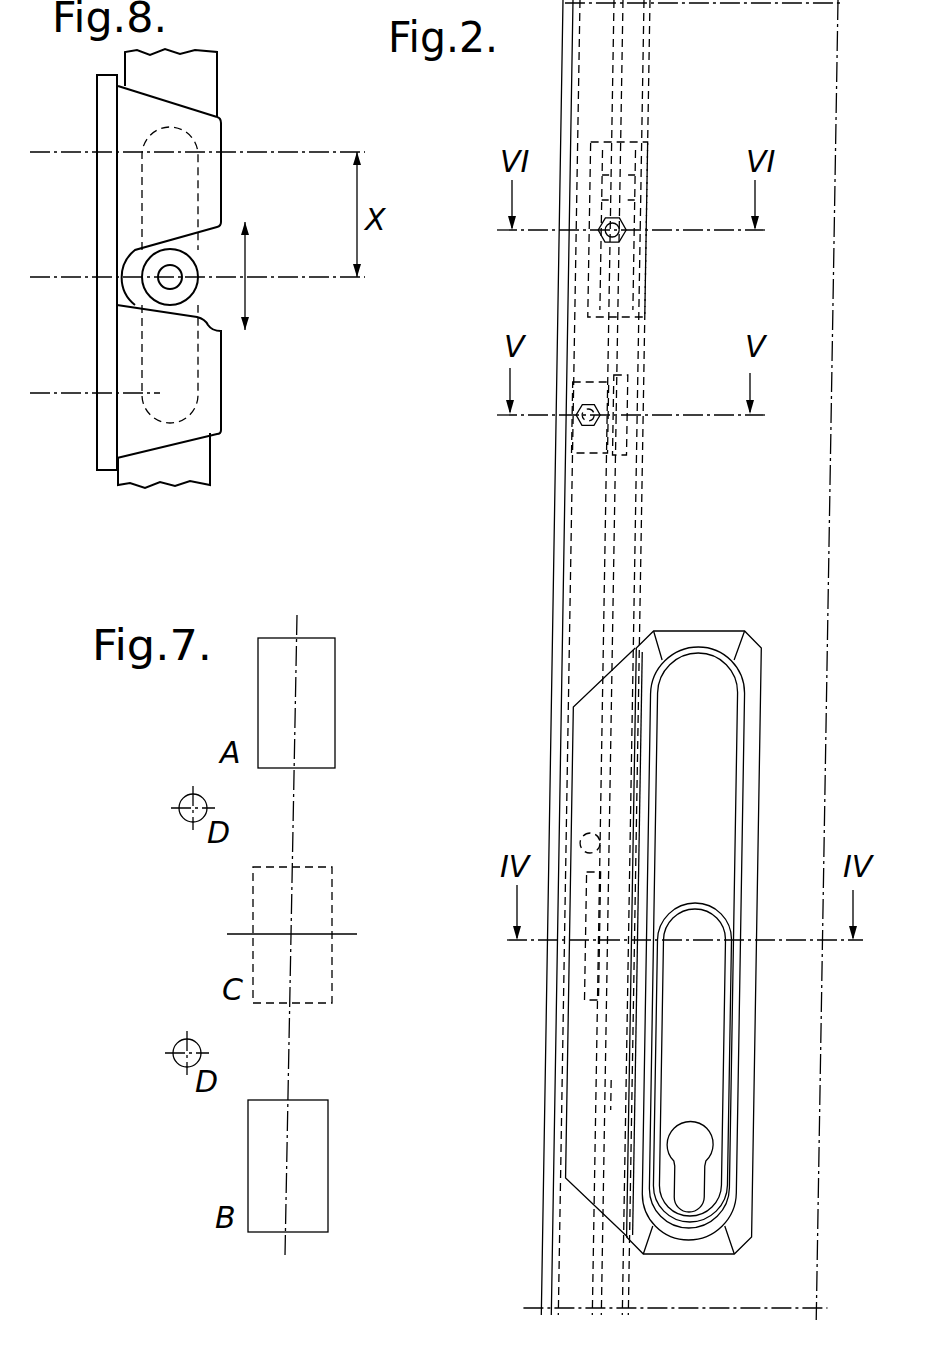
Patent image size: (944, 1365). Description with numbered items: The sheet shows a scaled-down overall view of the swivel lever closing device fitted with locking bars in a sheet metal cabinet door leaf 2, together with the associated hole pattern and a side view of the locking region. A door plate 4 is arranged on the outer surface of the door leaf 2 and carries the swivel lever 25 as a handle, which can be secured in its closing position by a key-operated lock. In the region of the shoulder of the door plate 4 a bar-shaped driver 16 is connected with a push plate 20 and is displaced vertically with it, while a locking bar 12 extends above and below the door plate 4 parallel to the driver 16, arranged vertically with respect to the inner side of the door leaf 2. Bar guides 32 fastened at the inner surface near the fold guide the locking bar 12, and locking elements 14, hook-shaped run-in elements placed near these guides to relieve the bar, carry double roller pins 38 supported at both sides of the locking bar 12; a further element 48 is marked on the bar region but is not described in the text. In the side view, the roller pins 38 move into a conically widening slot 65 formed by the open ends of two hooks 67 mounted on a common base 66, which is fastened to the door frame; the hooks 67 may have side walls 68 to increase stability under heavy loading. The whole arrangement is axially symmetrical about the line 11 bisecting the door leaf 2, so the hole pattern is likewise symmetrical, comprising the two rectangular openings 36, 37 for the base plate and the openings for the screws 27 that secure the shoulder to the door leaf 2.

In FIG. 2, the door leaf 2 is at (802, 83).
In FIG. 2, the door plate 4 is at (629, 632).
In FIG. 7, the line bisecting the door leaf 11 is at (247, 935).
In FIG. 2, the line bisecting the door leaf 11 is at (817, 958).
In FIG. 8, the locking bar 12 is at (203, 85).
In FIG. 2, the locking bar 12 is at (612, 522).
In FIG. 2, the locking elements 14 is at (660, 181).
In FIG. 2, the driver 16 is at (577, 987).
In FIG. 2, the push plate 20 is at (618, 1093).
In FIG. 2, the swivel lever 25 is at (720, 1064).
In FIG. 2, the screws 27 is at (575, 1045).
In FIG. 2, the bar guides 32 is at (644, 438).
In FIG. 7, the rectangular opening 36 is at (320, 768).
In FIG. 7, the rectangular opening 37 is at (305, 1232).
In FIG. 8, the double roller pins 38 is at (118, 252).
In FIG. 8, the nut 48 is at (286, 145).
In FIG. 2, the nut 48 is at (648, 300).
In FIG. 8, the conically widening slot 65 is at (212, 318).
In FIG. 8, the base 66 is at (97, 463).
In FIG. 8, the hooks 67 is at (180, 192).
In FIG. 8, the side walls 68 is at (43, 150).